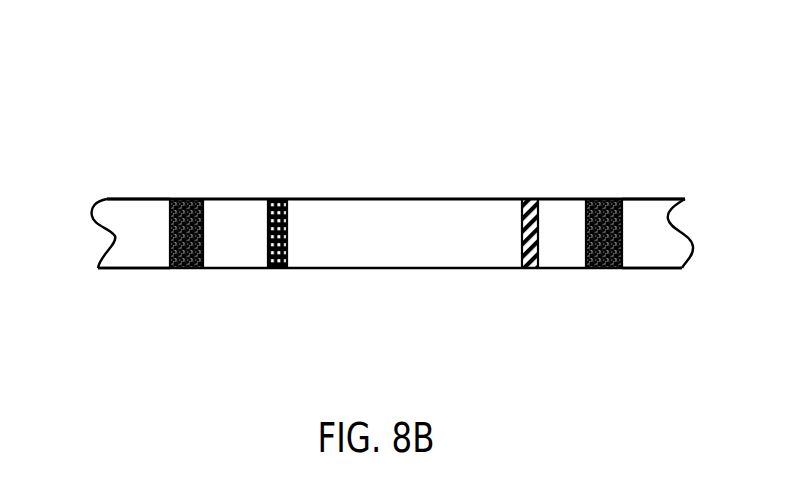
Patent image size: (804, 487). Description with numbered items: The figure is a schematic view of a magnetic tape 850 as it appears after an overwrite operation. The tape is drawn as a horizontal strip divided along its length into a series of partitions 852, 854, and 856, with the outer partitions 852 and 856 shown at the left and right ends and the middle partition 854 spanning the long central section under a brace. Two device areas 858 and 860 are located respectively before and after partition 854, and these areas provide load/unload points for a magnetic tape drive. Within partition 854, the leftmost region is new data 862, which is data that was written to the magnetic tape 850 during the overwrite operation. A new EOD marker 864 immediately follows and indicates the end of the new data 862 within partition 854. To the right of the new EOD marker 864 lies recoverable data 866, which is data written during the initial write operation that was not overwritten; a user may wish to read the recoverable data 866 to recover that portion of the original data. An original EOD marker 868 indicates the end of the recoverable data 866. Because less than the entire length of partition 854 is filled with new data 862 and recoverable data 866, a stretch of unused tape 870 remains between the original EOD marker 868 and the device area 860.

The magnetic tape 850 is at (110, 105).
The partition 852 is at (127, 198).
The partition 854 is at (580, 170).
The partition 856 is at (643, 198).
The device area 858 is at (178, 198).
The device area 860 is at (598, 198).
The new data 862 is at (271, 280).
The new EOD marker 864 is at (280, 268).
The recoverable data 866 is at (287, 280).
The original EOD marker 868 is at (530, 268).
The unused tape 870 is at (537, 280).